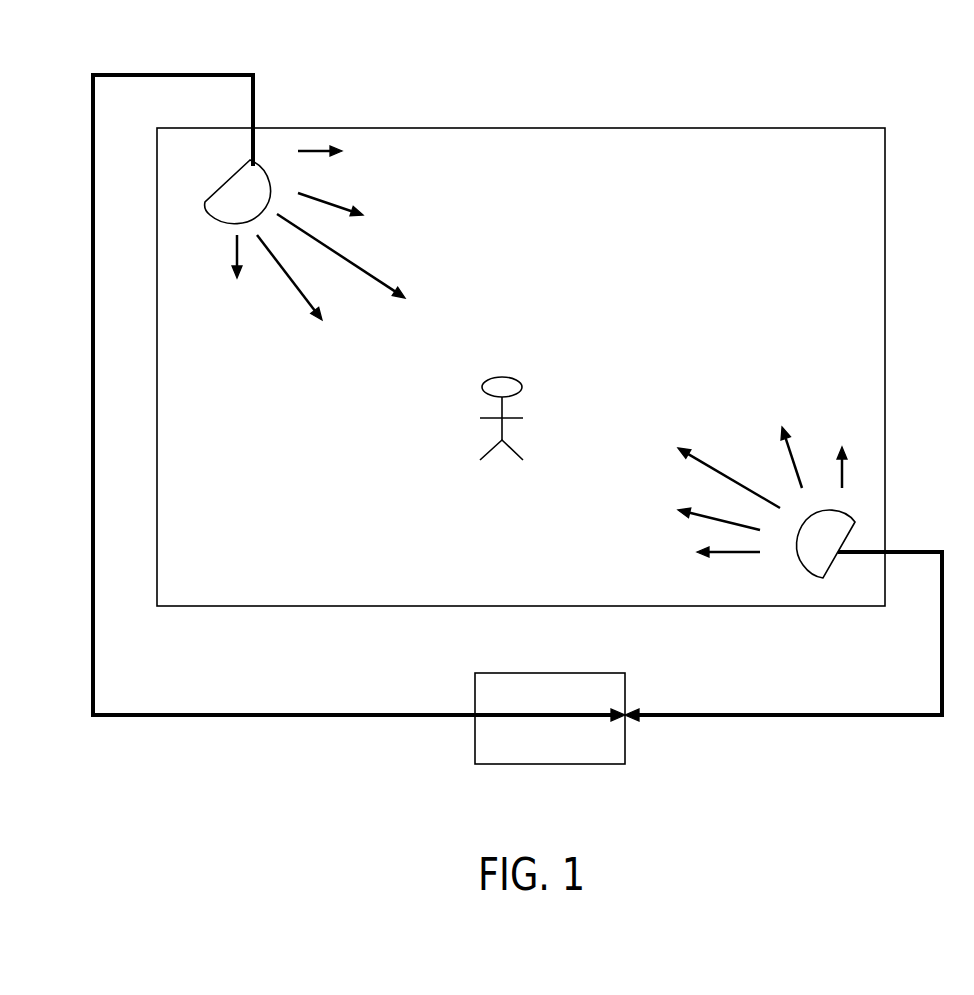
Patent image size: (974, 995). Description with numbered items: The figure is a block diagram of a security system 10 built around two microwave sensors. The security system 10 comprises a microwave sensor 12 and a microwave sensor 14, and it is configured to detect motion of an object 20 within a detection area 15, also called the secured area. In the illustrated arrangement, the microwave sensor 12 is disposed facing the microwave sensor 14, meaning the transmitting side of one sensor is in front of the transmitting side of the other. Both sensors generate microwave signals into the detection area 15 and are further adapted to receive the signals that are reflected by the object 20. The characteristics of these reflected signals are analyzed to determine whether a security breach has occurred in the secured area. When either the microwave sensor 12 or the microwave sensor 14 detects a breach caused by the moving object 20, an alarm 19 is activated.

The security system 10 is at (792, 57).
The microwave sensor 12 is at (205, 203).
The microwave sensor 14 is at (766, 547).
The detection area 15 is at (152, 578).
The alarm 19 is at (550, 718).
The object 20 is at (515, 391).